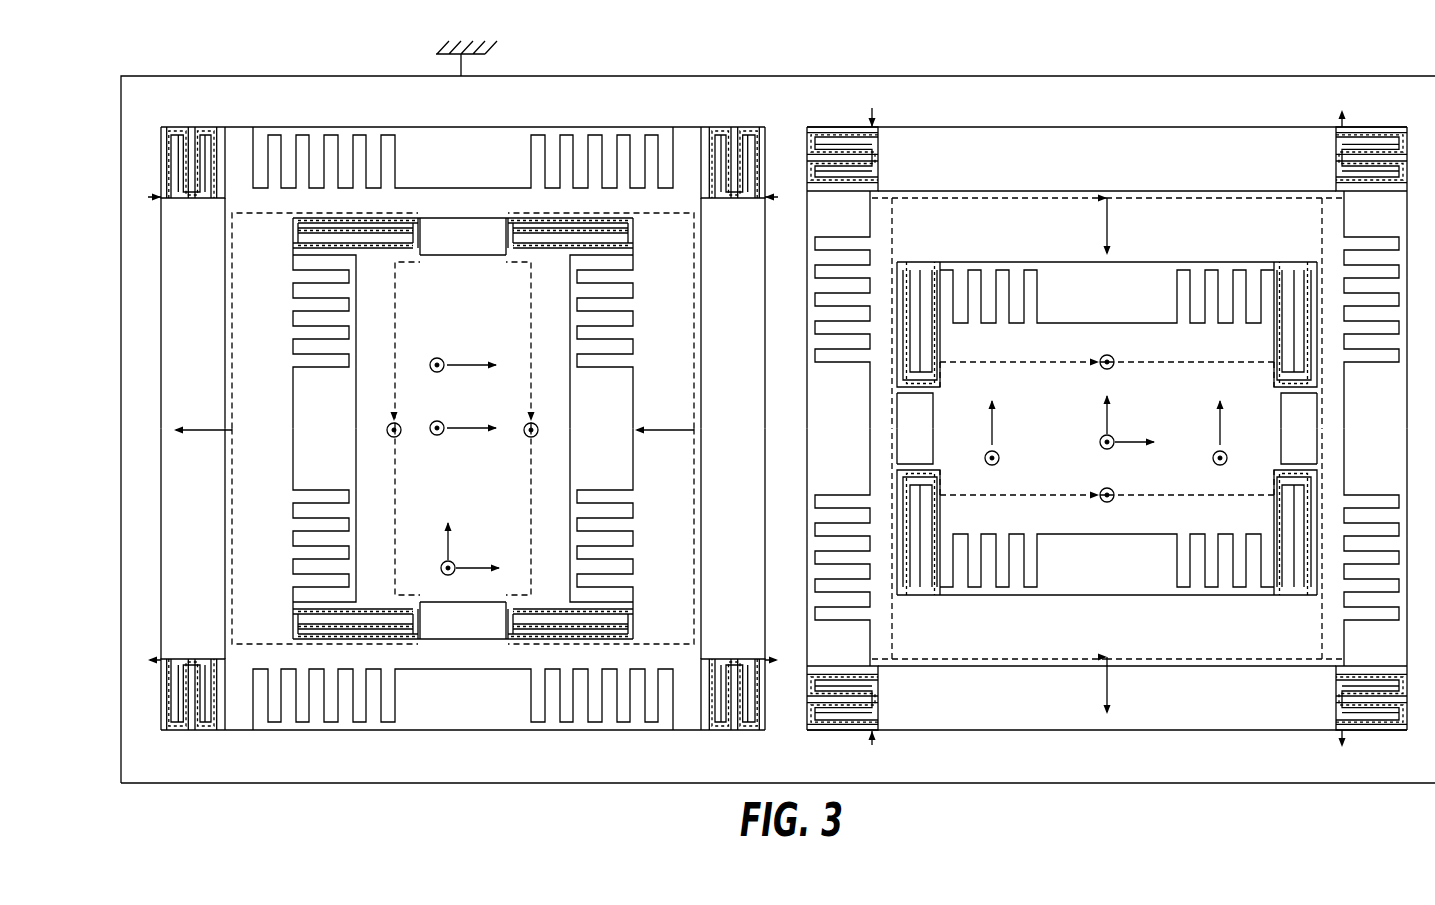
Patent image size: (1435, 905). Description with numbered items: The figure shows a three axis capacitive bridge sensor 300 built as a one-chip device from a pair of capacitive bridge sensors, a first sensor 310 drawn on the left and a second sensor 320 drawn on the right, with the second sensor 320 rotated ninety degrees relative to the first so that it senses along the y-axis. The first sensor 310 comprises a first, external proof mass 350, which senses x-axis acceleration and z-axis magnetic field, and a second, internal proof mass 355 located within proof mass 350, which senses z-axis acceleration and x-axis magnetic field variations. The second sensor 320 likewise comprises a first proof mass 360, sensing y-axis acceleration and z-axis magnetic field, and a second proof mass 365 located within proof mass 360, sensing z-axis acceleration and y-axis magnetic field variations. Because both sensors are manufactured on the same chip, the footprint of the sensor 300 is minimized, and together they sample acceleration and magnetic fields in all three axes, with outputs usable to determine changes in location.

The three axis capacitive bridge sensor 300 is at (1352, 47).
The first sensor 310 is at (497, 112).
The second sensor 320 is at (1142, 112).
The first (external) proof mass 350 is at (273, 296).
The second (internal) proof mass 355 is at (474, 486).
The first proof mass 360 is at (1007, 241).
The second proof mass 365 is at (1057, 427).